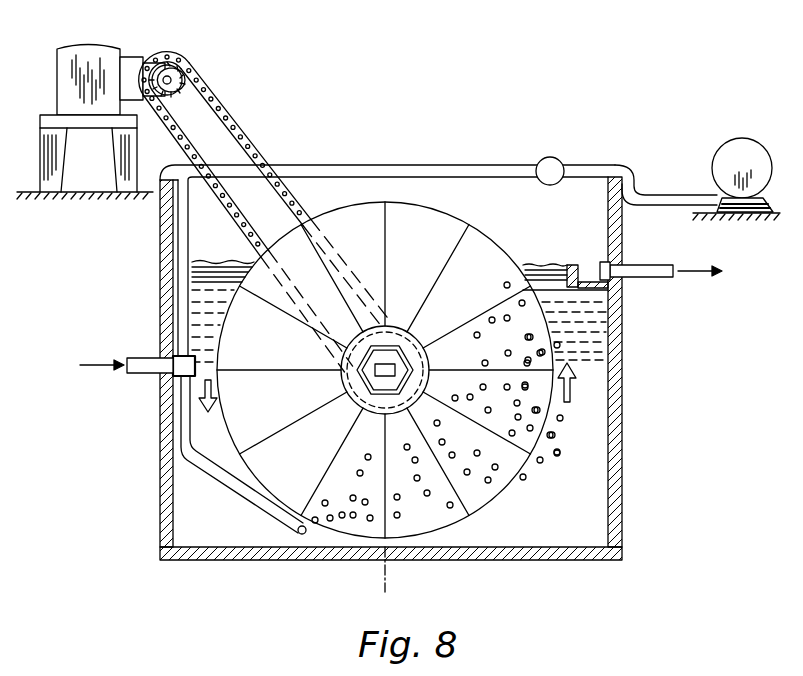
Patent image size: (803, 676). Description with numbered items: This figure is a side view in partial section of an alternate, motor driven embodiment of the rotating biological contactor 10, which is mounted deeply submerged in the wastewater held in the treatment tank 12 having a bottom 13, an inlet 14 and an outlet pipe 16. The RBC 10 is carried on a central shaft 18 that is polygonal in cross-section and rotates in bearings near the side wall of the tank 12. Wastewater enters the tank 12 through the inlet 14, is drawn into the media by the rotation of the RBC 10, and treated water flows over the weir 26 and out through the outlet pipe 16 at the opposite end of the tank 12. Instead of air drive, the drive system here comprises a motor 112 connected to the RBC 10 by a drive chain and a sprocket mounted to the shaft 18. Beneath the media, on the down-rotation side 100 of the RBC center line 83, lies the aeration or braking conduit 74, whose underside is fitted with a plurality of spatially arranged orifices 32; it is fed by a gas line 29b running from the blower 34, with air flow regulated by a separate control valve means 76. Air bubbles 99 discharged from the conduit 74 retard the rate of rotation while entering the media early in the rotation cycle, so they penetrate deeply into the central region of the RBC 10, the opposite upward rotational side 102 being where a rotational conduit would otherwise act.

The rotating biological contactor 10 is at (492, 226).
The treatment tank 12 is at (614, 333).
The bottom 13 is at (162, 549).
The inlet 14 is at (228, 112).
The outlet pipe 16 is at (655, 264).
The central shaft 18 is at (373, 369).
The weir 26 is at (571, 263).
The gas line 29b is at (172, 247).
The orifices 32 is at (285, 562).
The blower 34 is at (716, 164).
The aeration conduit 74 is at (297, 530).
The control valve means 76 is at (556, 157).
The RBC center line 83 is at (380, 578).
The air bubbles 99 is at (559, 342).
The down-rotation side 100 is at (203, 388).
The upward rotational side 102 is at (572, 390).
The motor 112 is at (110, 46).